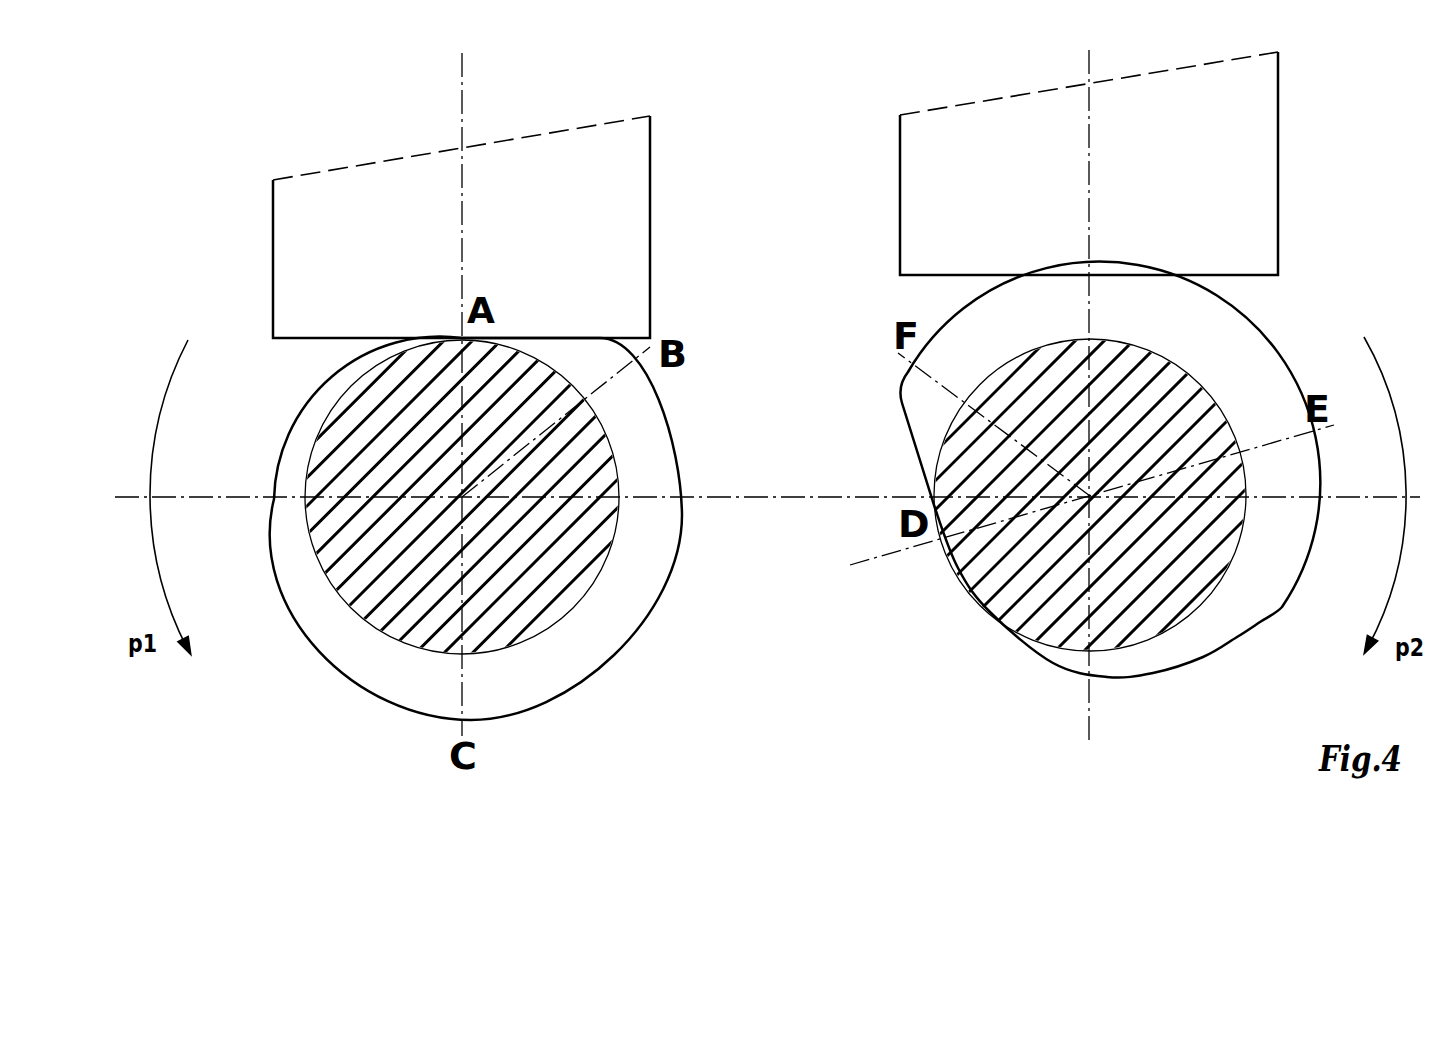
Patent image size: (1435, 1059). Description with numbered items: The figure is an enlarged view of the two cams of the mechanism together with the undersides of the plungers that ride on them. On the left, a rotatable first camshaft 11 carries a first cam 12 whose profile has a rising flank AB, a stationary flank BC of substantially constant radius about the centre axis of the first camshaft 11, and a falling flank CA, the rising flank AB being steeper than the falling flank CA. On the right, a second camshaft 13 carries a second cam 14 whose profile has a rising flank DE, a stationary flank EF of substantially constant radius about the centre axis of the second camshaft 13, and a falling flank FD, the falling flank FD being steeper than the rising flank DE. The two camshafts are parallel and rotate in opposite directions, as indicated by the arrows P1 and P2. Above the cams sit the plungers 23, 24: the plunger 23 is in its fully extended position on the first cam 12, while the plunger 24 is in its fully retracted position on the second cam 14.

The first camshaft 11 is at (435, 448).
The first cam 12 is at (431, 689).
The second camshaft 13 is at (1045, 540).
The second cam 14 is at (1274, 477).
The plunger 23 is at (543, 203).
The plunger 24 is at (1177, 183).